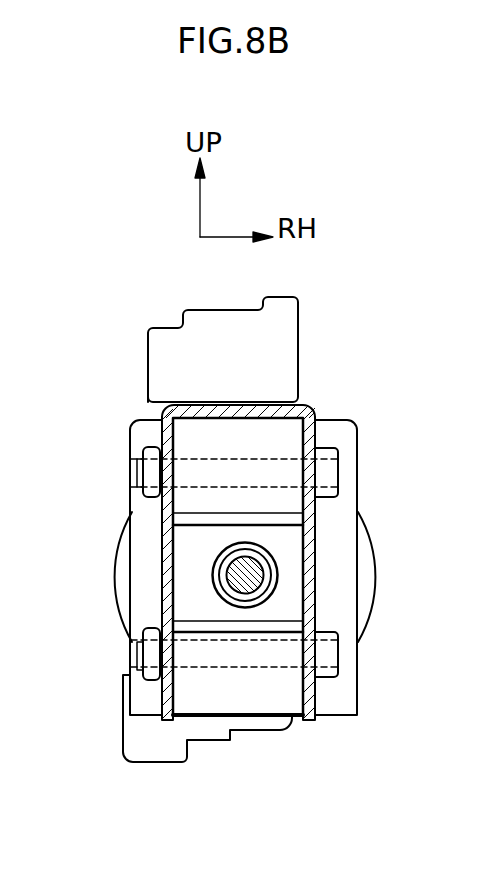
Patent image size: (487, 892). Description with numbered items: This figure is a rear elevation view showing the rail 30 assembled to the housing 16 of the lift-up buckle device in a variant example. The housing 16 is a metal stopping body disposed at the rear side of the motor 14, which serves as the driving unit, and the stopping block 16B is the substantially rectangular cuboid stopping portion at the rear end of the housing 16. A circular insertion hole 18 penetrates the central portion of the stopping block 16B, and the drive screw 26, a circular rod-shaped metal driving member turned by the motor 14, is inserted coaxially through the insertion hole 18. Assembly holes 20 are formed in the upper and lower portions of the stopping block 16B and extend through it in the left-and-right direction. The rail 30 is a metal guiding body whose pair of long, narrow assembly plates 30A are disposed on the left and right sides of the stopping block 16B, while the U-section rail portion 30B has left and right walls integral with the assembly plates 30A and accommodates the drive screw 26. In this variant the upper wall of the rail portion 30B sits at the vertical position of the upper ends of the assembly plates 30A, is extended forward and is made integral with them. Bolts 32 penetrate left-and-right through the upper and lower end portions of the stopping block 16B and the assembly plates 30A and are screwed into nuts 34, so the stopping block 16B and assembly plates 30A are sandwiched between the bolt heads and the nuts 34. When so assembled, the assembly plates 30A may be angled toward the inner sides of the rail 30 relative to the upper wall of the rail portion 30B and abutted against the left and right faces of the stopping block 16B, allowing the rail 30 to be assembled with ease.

The motor 14 is at (375, 562).
The housing 16 is at (350, 421).
The stopping block 16B is at (273, 685).
The insertion hole 18 is at (213, 585).
The assembly hole 20 is at (208, 515).
The drive screw 26 is at (278, 583).
The rail 30 is at (237, 542).
The assembly plate 30A is at (160, 570).
The rail portion 30B is at (250, 410).
The bolt 32 is at (338, 467).
The nut 34 is at (145, 452).